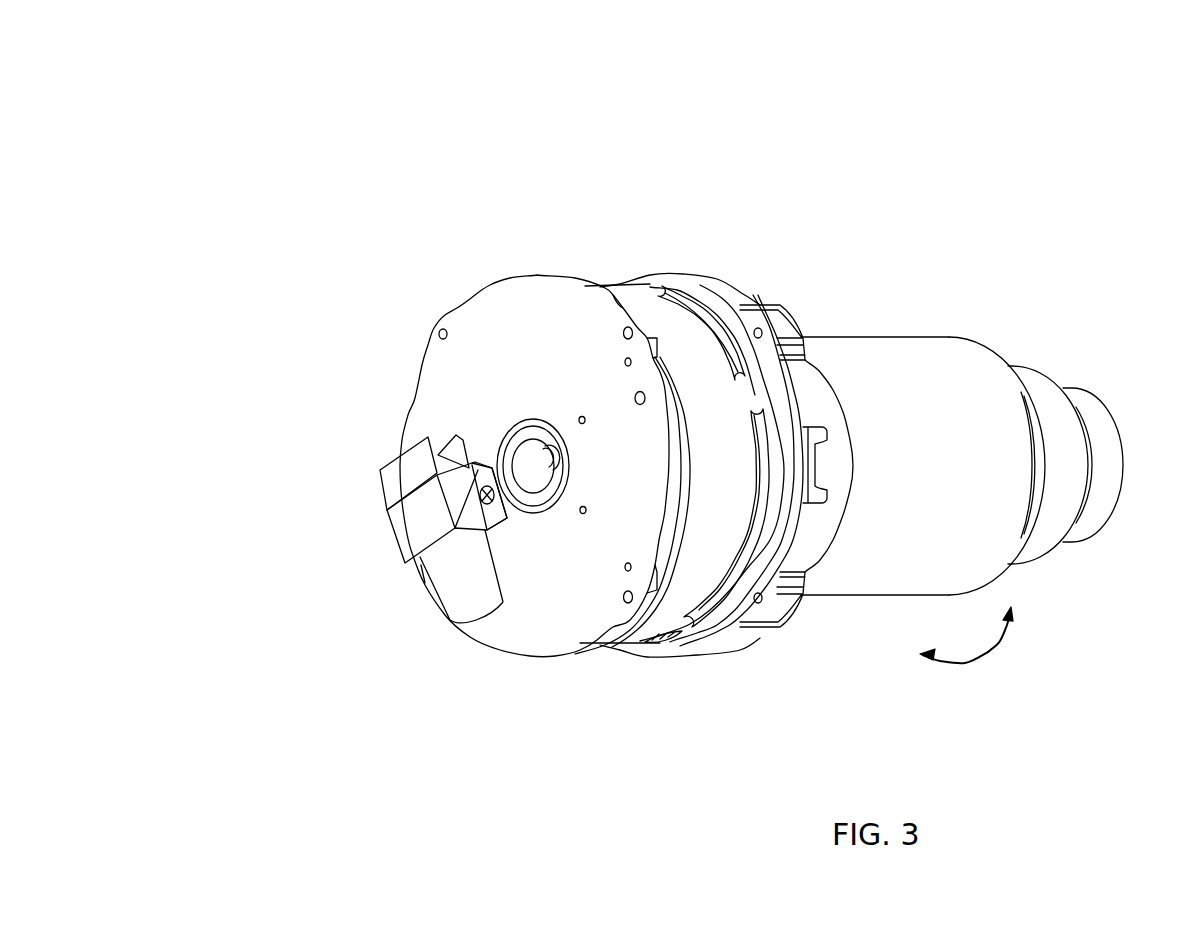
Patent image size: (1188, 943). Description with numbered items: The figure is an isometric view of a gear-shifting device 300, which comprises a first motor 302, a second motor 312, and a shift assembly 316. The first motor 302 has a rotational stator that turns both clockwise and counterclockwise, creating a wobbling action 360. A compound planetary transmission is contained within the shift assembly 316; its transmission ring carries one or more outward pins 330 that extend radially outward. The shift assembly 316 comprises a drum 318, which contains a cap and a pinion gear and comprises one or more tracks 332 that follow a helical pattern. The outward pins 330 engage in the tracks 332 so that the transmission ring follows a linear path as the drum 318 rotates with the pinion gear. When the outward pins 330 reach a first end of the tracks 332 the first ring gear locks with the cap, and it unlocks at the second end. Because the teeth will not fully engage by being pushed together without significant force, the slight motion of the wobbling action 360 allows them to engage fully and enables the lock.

The gear-shifting device 300 is at (291, 76).
The first motor 302 is at (1158, 313).
The second motor 312 is at (453, 583).
The shift assembly 316 is at (377, 295).
The drum 318 is at (658, 622).
The outward pins 330 is at (718, 593).
The tracks 332 is at (757, 520).
The wobbling action 360 is at (988, 652).